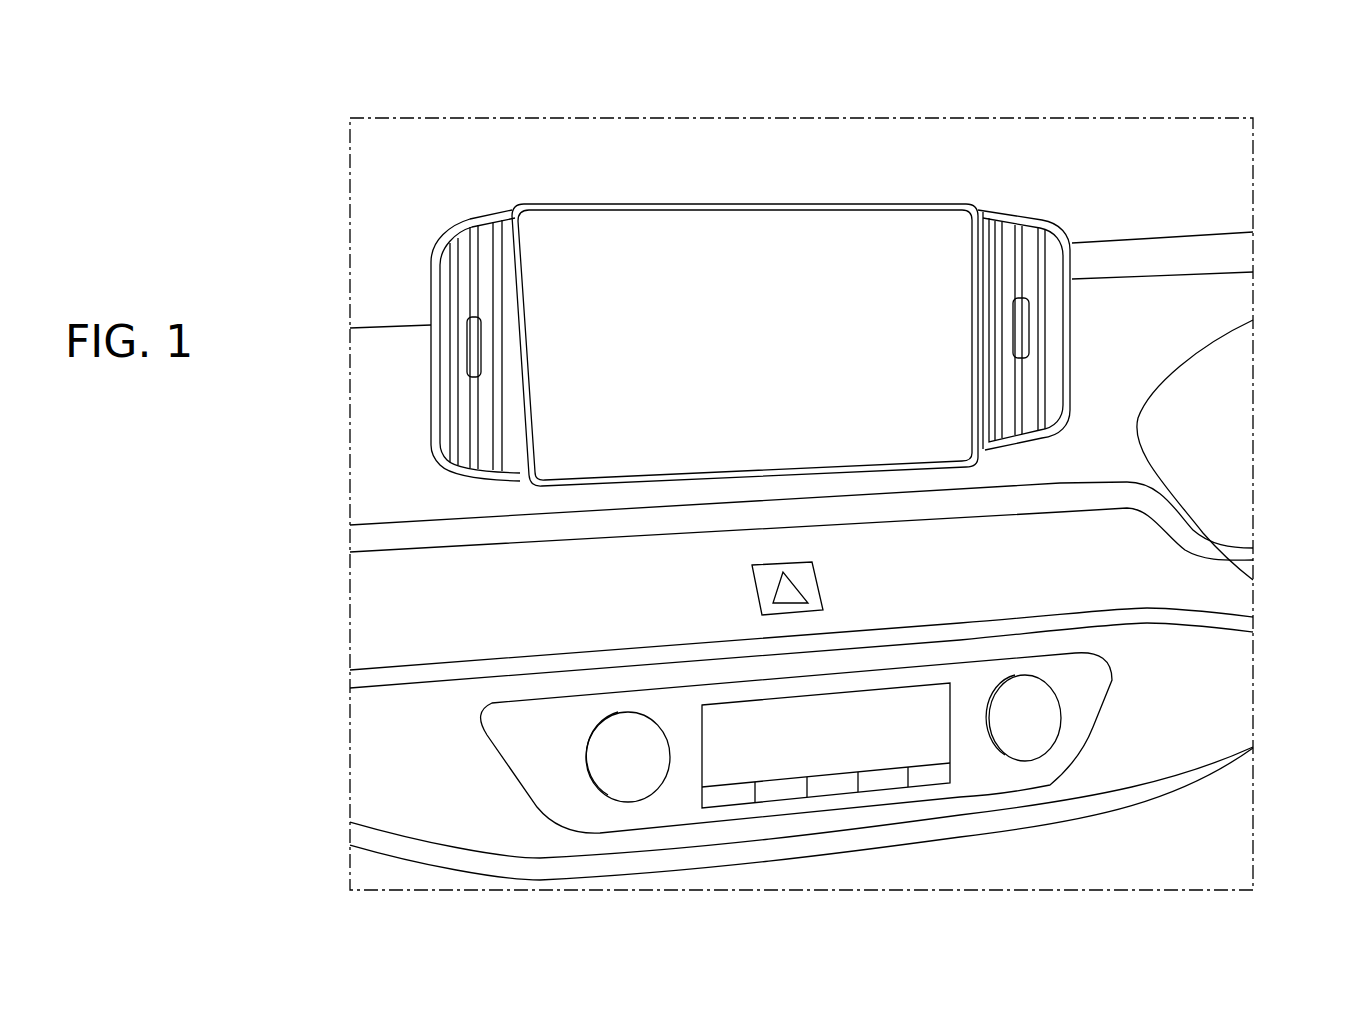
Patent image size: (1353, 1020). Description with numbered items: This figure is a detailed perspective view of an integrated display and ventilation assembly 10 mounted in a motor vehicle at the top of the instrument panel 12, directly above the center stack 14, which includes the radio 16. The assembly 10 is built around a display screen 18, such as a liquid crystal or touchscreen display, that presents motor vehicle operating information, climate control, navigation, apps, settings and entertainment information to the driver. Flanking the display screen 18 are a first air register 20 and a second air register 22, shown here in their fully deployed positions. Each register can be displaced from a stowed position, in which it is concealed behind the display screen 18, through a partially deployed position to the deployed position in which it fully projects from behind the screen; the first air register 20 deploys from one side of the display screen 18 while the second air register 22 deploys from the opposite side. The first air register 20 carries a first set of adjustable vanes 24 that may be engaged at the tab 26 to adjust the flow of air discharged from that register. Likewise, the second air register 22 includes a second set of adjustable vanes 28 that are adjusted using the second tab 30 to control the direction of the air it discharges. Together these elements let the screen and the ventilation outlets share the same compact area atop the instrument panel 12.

The integrated display and ventilation assembly 10 is at (972, 175).
The instrument panel 12 is at (375, 462).
The center stack 14 is at (1197, 800).
The radio 16 is at (677, 798).
The display screen 18 is at (638, 250).
The first air register 20 is at (382, 359).
The second air register 22 is at (1149, 312).
The first set of adjustable vanes 24 is at (478, 435).
The tab 26 is at (470, 340).
The second set of adjustable vanes 28 is at (1030, 388).
The second tab 30 is at (1024, 327).